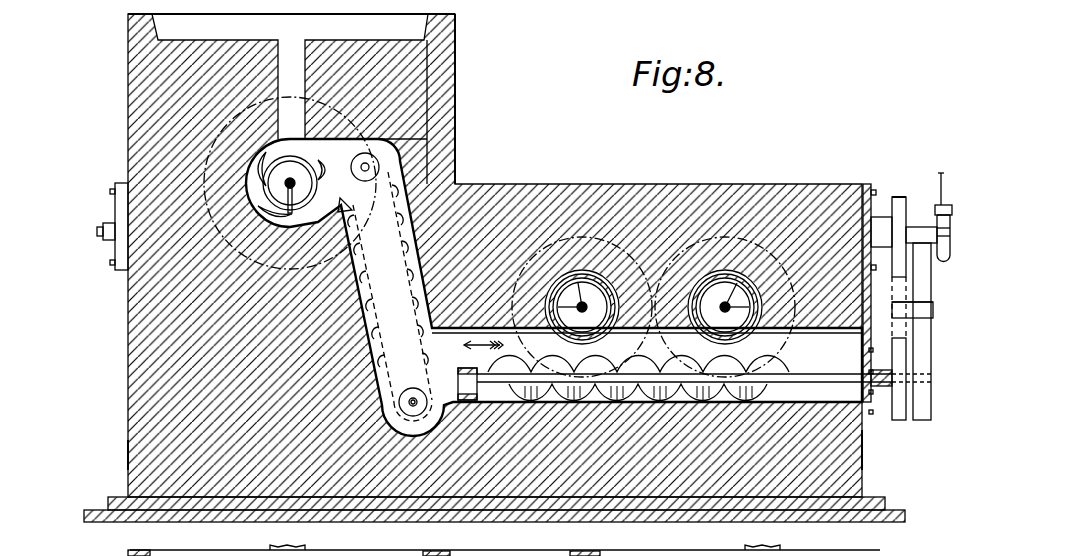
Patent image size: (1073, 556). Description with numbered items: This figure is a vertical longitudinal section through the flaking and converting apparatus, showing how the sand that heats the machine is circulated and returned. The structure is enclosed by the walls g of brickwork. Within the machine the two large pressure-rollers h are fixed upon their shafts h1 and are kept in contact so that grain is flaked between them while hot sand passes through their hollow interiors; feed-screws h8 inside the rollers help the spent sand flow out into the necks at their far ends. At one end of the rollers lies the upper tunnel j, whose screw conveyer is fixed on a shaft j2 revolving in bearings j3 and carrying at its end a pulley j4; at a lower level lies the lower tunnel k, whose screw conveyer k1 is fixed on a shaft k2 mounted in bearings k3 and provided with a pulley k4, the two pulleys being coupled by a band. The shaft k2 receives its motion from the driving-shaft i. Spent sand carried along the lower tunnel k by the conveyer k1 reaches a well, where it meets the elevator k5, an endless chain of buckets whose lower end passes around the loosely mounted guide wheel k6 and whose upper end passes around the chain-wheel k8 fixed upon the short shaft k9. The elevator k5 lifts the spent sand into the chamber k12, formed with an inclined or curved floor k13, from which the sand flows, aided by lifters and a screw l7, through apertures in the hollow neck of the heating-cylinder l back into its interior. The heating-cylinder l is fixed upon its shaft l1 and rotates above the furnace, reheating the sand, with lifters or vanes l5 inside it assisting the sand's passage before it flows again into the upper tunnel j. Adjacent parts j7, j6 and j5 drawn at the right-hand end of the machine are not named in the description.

The walls of the apparatus g is at (147, 377).
The heating-cylinder l is at (207, 167).
The chamber k12 is at (250, 167).
The shaft of heating-cylinder l1 is at (287, 182).
The screw l7 is at (130, 281).
The upper tunnel j is at (115, 190).
The bearings j3 is at (103, 226).
The screw-conveyer shaft j2 is at (100, 234).
The supporting or guide wheel k6 is at (390, 415).
The short shaft k9 is at (382, 160).
The chain-wheel k8 is at (378, 167).
The elevator k5 is at (400, 190).
The inclined or curved floor k13 is at (405, 215).
The pressure-rollers h is at (603, 245).
The roller shafts h1 is at (595, 275).
The feed-screws h8 is at (582, 302).
The screw conveyer k1 is at (742, 385).
The lifters or vanes l5 is at (472, 392).
The pulley j4 is at (906, 197).
The adjusting rod j7 is at (943, 178).
The rod housing j6 is at (950, 256).
The housing cap j5 is at (952, 258).
The driving-shaft i is at (932, 305).
The bearings k3 is at (888, 373).
The screw-conveyer shaft k2 is at (933, 383).
The pulley k4 is at (915, 417).
The lower tunnel k is at (892, 417).